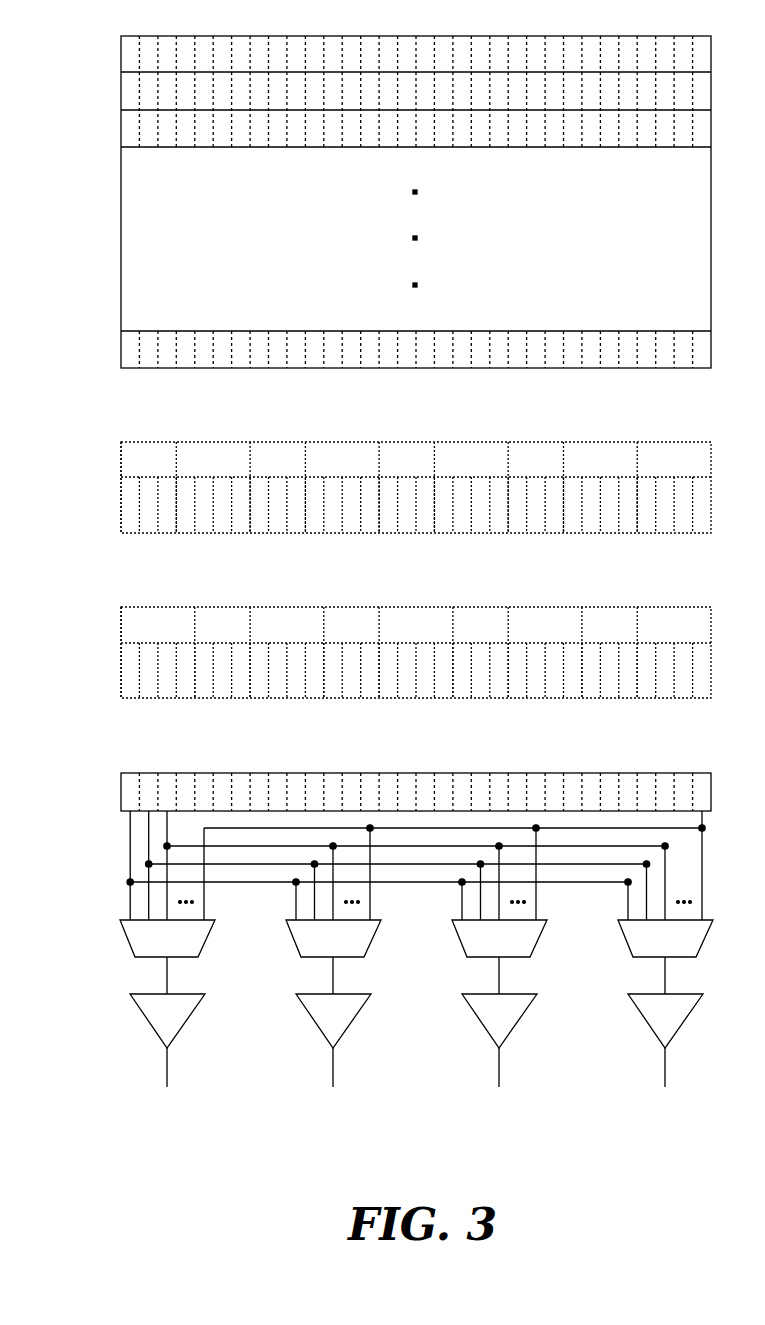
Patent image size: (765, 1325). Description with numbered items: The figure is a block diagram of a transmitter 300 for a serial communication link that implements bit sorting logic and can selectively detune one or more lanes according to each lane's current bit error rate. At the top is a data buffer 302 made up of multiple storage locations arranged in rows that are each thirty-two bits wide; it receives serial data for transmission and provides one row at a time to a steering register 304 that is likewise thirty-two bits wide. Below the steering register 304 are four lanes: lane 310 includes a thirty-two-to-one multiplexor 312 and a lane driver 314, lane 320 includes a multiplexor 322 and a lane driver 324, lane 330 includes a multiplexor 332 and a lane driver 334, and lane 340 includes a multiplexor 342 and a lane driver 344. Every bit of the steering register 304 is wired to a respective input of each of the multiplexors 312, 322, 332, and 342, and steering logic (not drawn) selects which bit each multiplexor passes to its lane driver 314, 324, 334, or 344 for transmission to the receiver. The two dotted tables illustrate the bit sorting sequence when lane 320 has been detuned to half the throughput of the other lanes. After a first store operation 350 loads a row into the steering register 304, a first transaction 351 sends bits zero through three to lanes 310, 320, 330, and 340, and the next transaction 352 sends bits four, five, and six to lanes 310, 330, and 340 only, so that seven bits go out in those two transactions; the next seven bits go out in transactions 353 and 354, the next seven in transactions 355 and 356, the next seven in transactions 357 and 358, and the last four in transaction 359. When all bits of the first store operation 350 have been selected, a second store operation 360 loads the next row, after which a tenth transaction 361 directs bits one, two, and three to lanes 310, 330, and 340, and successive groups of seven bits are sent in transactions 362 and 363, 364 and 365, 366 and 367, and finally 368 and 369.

The transmitter 300 is at (68, 1190).
The data buffer 302 is at (132, 35).
The steering register 304 is at (132, 772).
The lane 310 is at (140, 1028).
The 32-to-1 multiplexor 312 is at (130, 943).
The lane driver 314 is at (148, 1025).
The lane 320 is at (306, 1028).
The 32-to-1 multiplexor 322 is at (296, 943).
The lane driver 324 is at (314, 1025).
The lane 330 is at (472, 1028).
The 32-to-1 multiplexor 332 is at (462, 943).
The lane driver 334 is at (480, 1025).
The lane 340 is at (638, 1028).
The 32-to-1 multiplexor 342 is at (628, 943).
The lane driver 344 is at (646, 1025).
The first store operation 350 is at (377, 631).
The first transaction 351 is at (130, 606).
The transaction 352 is at (204, 606).
The transaction 353 is at (259, 606).
The transaction 354 is at (333, 606).
The transaction 355 is at (388, 606).
The transaction 356 is at (462, 606).
The transaction 357 is at (517, 606).
The transaction 358 is at (591, 606).
The transaction 359 is at (646, 606).
The second store operation 360 is at (375, 466).
The transaction 361 is at (130, 441).
The transaction 362 is at (185, 441).
The transaction 363 is at (259, 441).
The transaction 364 is at (314, 441).
The transaction 365 is at (388, 441).
The transaction 366 is at (443, 441).
The transaction 367 is at (517, 441).
The transaction 368 is at (572, 441).
The transaction 369 is at (646, 441).